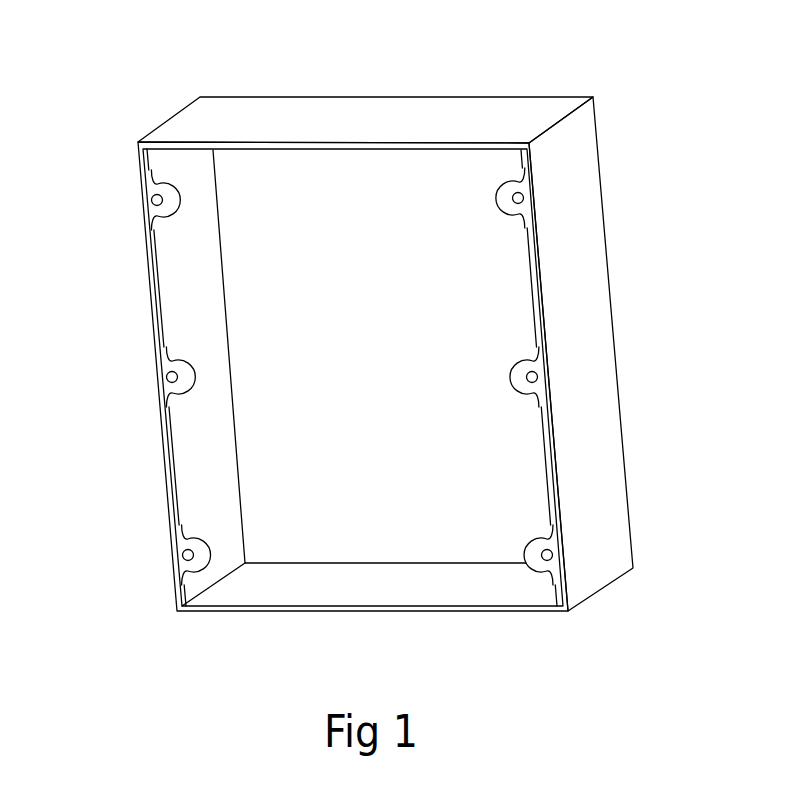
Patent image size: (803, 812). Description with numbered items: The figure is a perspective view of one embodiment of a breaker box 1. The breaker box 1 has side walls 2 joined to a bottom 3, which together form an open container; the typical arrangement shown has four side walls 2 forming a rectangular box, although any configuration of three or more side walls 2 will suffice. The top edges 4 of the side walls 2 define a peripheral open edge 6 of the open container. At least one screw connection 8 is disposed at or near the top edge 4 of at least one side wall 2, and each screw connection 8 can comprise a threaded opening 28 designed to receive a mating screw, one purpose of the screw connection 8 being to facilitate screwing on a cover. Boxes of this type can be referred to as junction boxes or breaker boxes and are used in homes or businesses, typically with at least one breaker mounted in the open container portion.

The breaker box 1 is at (652, 168).
The side wall 2 is at (338, 113).
The bottom 3 is at (357, 466).
The top edge 4 is at (148, 283).
The peripheral open edge 6 is at (167, 498).
The screw connection 8 is at (146, 217).
The threaded opening 28 is at (167, 381).